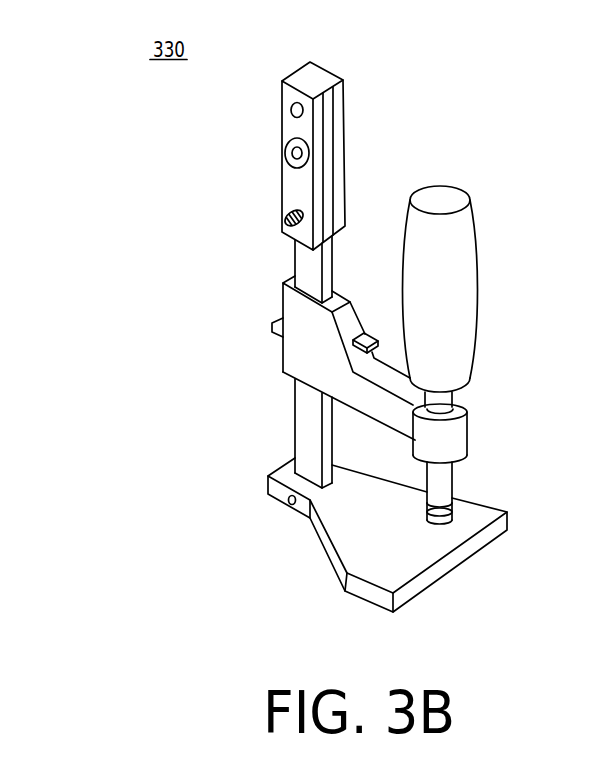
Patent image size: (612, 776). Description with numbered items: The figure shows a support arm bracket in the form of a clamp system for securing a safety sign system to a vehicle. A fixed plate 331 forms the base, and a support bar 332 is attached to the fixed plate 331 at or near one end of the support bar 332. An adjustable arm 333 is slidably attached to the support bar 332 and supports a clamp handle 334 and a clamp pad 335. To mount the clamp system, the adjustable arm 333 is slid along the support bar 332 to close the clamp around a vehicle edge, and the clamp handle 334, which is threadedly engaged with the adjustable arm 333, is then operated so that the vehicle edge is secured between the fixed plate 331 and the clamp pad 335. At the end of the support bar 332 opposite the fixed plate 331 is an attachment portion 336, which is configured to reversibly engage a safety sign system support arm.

The fixed plate 331 is at (332, 548).
The support bar 332 is at (295, 424).
The adjustable arm 333 is at (292, 355).
The clamp handle 334 is at (477, 248).
The clamp pad 335 is at (452, 513).
The attachment portion 336 is at (346, 130).